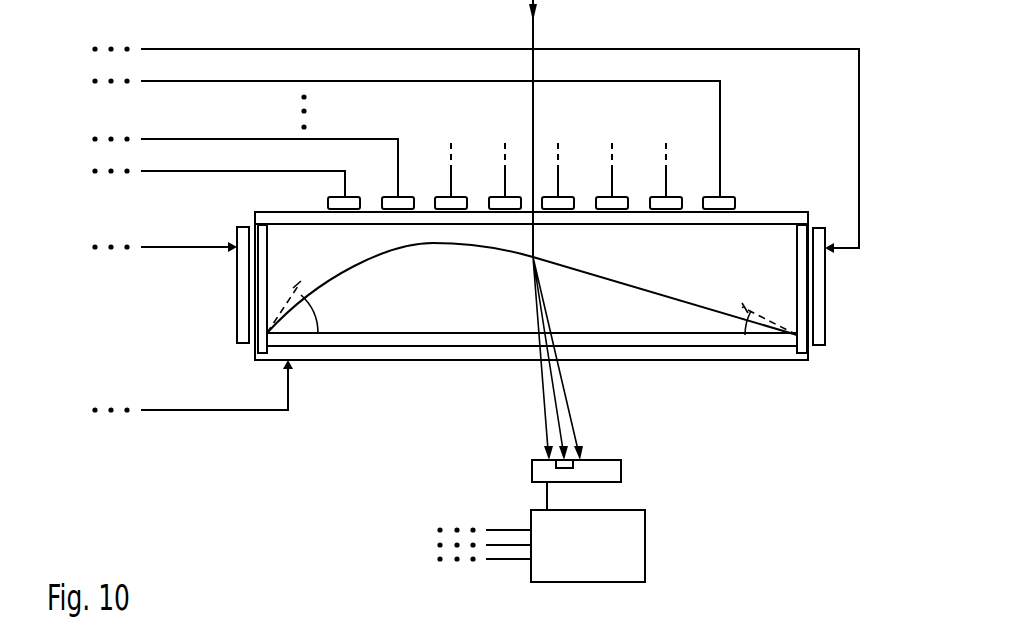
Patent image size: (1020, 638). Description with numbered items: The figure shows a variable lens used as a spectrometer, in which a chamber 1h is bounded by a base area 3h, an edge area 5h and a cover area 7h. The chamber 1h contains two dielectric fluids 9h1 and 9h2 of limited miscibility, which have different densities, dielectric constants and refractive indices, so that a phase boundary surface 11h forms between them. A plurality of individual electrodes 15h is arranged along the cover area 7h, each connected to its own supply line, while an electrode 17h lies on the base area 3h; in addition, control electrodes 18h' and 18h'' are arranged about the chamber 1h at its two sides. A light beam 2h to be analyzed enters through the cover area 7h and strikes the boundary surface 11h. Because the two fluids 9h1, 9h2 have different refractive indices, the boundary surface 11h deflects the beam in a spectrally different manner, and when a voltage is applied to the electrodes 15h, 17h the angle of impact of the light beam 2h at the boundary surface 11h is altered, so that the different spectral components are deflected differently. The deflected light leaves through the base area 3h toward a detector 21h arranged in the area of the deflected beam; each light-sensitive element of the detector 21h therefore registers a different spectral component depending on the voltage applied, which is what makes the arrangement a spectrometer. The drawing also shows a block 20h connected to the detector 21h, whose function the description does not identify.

The chamber 1h is at (421, 376).
The light beam 2h is at (535, 30).
The base area 3h is at (618, 342).
The edge area 5h is at (803, 343).
The cover area 7h is at (775, 213).
The dielectric fluid 9h1 is at (757, 270).
The dielectric fluid 9h2 is at (511, 306).
The boundary surface 11h is at (450, 245).
The electrodes 15h is at (607, 197).
The electrode 17h is at (365, 360).
The control electrode 18h' is at (208, 285).
The control electrode 18h'' is at (833, 256).
The control unit 20h is at (605, 560).
The detector 21h is at (623, 471).